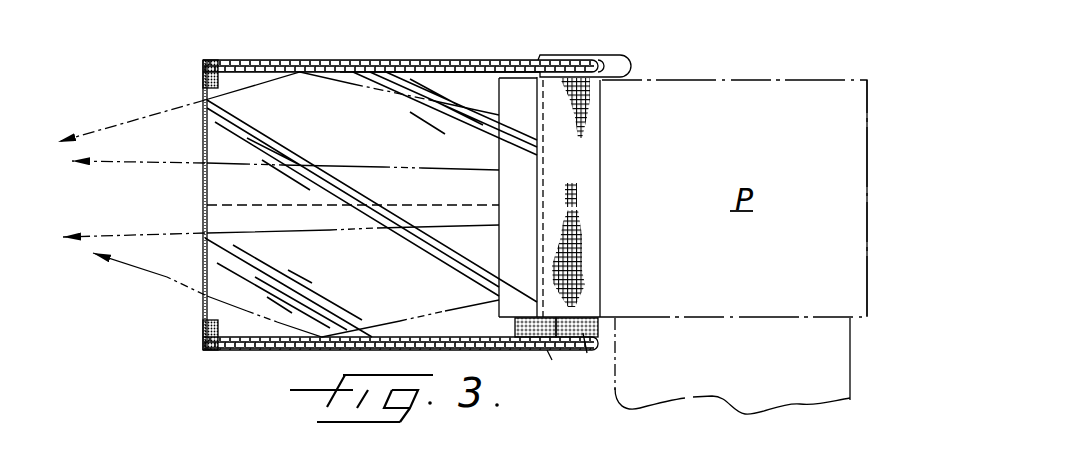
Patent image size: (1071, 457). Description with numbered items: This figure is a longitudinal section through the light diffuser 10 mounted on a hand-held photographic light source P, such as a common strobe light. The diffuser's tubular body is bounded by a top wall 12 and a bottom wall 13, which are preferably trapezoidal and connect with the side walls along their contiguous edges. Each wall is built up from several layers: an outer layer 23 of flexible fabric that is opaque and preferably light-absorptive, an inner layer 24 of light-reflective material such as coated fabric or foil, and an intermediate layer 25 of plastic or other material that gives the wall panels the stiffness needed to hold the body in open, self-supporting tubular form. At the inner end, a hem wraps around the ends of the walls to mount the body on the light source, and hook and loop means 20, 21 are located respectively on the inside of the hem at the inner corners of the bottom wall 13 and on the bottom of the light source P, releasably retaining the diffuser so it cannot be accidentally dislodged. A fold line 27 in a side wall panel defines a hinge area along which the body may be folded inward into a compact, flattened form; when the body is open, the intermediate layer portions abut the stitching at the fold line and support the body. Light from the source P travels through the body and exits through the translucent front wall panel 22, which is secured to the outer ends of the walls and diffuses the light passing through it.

The light diffuser 10 is at (247, 352).
The top wall 12 is at (511, 62).
The bottom wall 13 is at (220, 350).
The hook and loop means 20 is at (581, 350).
The hook and loop means 21 is at (550, 352).
The front wall panel 22 is at (203, 178).
The outer layer 23 is at (353, 68).
The inner layer 24 is at (476, 72).
The intermediate layer 25 is at (258, 60).
The fold line 27 is at (431, 145).